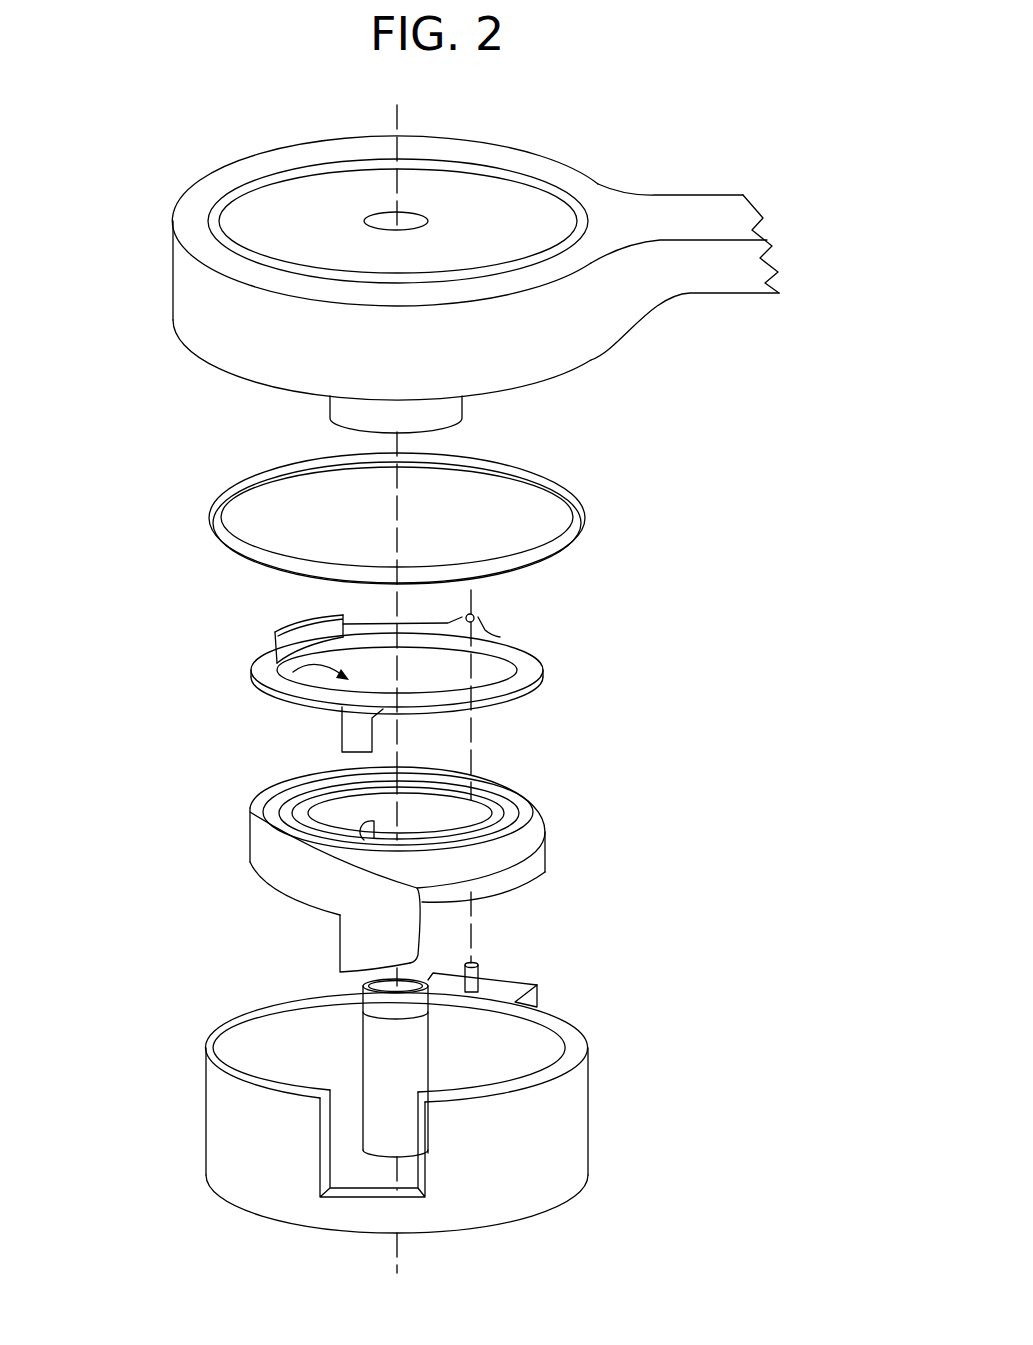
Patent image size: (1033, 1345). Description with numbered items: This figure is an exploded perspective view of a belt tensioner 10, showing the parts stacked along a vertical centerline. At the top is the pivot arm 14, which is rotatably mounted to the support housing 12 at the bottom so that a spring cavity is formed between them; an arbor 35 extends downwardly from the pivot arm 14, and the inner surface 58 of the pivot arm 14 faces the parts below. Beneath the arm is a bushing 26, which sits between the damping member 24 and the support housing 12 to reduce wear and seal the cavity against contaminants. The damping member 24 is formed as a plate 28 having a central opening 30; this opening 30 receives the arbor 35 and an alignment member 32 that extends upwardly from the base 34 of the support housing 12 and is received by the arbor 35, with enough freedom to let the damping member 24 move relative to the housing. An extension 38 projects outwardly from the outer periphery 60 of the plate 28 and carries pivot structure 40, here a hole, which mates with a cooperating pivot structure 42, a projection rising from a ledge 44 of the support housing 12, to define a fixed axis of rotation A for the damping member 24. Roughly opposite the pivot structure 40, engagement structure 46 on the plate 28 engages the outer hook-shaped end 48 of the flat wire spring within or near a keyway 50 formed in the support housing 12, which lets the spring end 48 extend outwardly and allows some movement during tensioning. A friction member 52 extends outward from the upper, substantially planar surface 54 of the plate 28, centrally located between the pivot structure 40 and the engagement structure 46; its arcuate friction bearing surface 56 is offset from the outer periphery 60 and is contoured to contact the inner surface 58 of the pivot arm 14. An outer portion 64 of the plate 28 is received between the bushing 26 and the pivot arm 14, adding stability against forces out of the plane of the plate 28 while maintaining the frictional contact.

The belt tensioner 10 is at (110, 305).
The support housing 12 is at (417, 1096).
The pivot arm 14 is at (536, 166).
The damping member 24 is at (395, 676).
The bushing 26 is at (578, 490).
The plate 28 is at (522, 678).
The opening 30 is at (283, 678).
The alignment member 32 is at (383, 1053).
The base 34 is at (458, 1095).
The arbor 35 is at (437, 402).
The extension 38 is at (483, 623).
The pivot structure 40 is at (462, 617).
The cooperating pivot structure 42 is at (497, 985).
The ledge 44 is at (513, 990).
The engagement structure 46 is at (357, 730).
The outer hook-shaped end 48 is at (358, 942).
The keyway 50 is at (334, 1150).
The friction member 52 is at (285, 620).
The upper surface 54 is at (265, 663).
The friction bearing surface 56 is at (258, 630).
The inner surface 58 is at (213, 366).
The outer periphery 60 is at (280, 702).
The outer portion 64 is at (268, 652).
The axis of rotation A is at (470, 929).